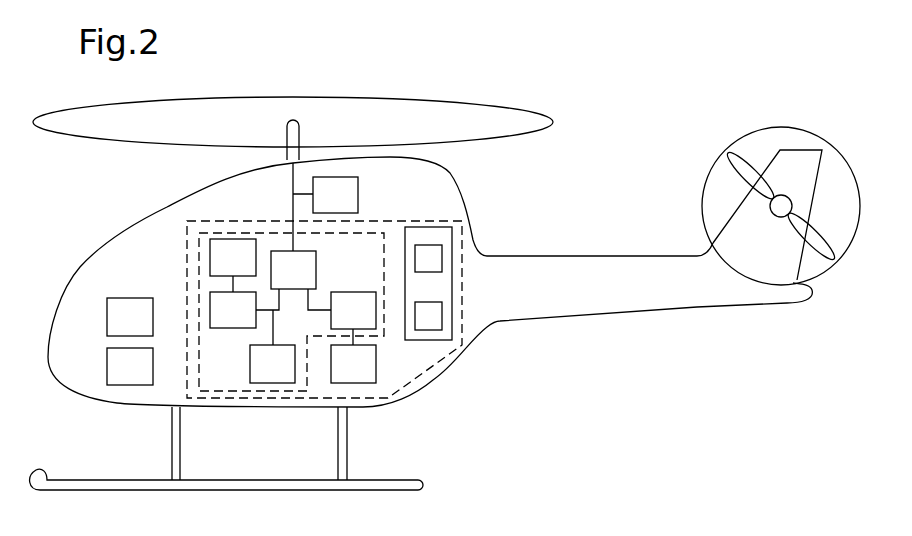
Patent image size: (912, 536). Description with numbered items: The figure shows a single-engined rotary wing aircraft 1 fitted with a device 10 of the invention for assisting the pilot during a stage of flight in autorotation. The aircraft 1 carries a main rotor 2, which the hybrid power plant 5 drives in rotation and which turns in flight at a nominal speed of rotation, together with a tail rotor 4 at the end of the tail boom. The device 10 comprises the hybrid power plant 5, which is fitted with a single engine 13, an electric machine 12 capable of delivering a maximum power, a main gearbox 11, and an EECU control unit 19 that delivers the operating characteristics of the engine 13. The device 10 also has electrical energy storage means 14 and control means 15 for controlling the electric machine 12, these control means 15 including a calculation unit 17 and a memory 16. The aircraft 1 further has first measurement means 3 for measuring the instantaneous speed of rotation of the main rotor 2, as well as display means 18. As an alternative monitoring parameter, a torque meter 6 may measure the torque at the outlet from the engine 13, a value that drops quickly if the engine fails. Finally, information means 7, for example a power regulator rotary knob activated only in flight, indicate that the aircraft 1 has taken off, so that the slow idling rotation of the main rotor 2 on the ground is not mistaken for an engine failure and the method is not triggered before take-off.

The rotary wing aircraft 1 is at (487, 412).
The main rotor 2 is at (486, 103).
The first measurement means 3 is at (327, 208).
The tail rotor 4 is at (783, 127).
The hybrid power plant 5 is at (199, 247).
The torque meter 6 is at (281, 377).
The information means 7 is at (122, 379).
The device 10 is at (213, 221).
The main gearbox 11 is at (282, 283).
The electric machine 12 is at (366, 323).
The engine 13 is at (220, 323).
The electrical energy storage means 14 is at (366, 377).
The control means 15 is at (452, 267).
The memory 16 is at (442, 311).
The calculation unit 17 is at (432, 245).
The display means 18 is at (117, 330).
The EECU control unit 19 is at (220, 271).